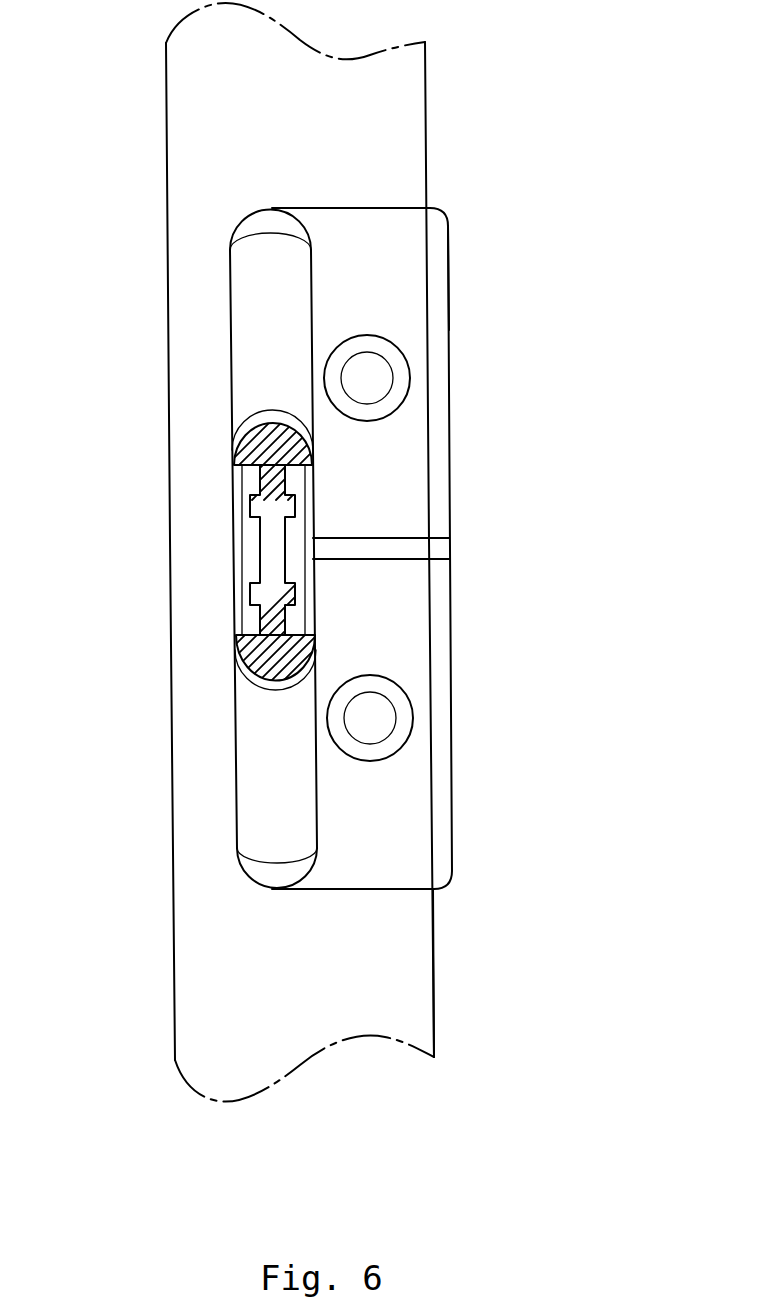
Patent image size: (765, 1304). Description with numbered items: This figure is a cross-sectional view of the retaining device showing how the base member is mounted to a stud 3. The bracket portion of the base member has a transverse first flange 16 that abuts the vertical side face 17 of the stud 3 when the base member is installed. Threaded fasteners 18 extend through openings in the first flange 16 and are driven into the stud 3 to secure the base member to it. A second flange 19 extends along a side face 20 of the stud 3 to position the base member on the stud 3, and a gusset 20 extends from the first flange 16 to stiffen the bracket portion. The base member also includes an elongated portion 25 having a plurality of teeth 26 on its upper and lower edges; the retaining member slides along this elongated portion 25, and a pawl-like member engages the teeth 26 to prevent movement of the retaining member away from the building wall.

The stud 3 is at (216, 185).
The first flange 16 is at (422, 487).
The vertical side face 17 is at (218, 960).
The threaded fasteners 18 is at (410, 372).
The second flange 19 is at (450, 263).
The side face 20 is at (380, 559).
The elongated portion 25 is at (262, 555).
The teeth 26 is at (272, 425).